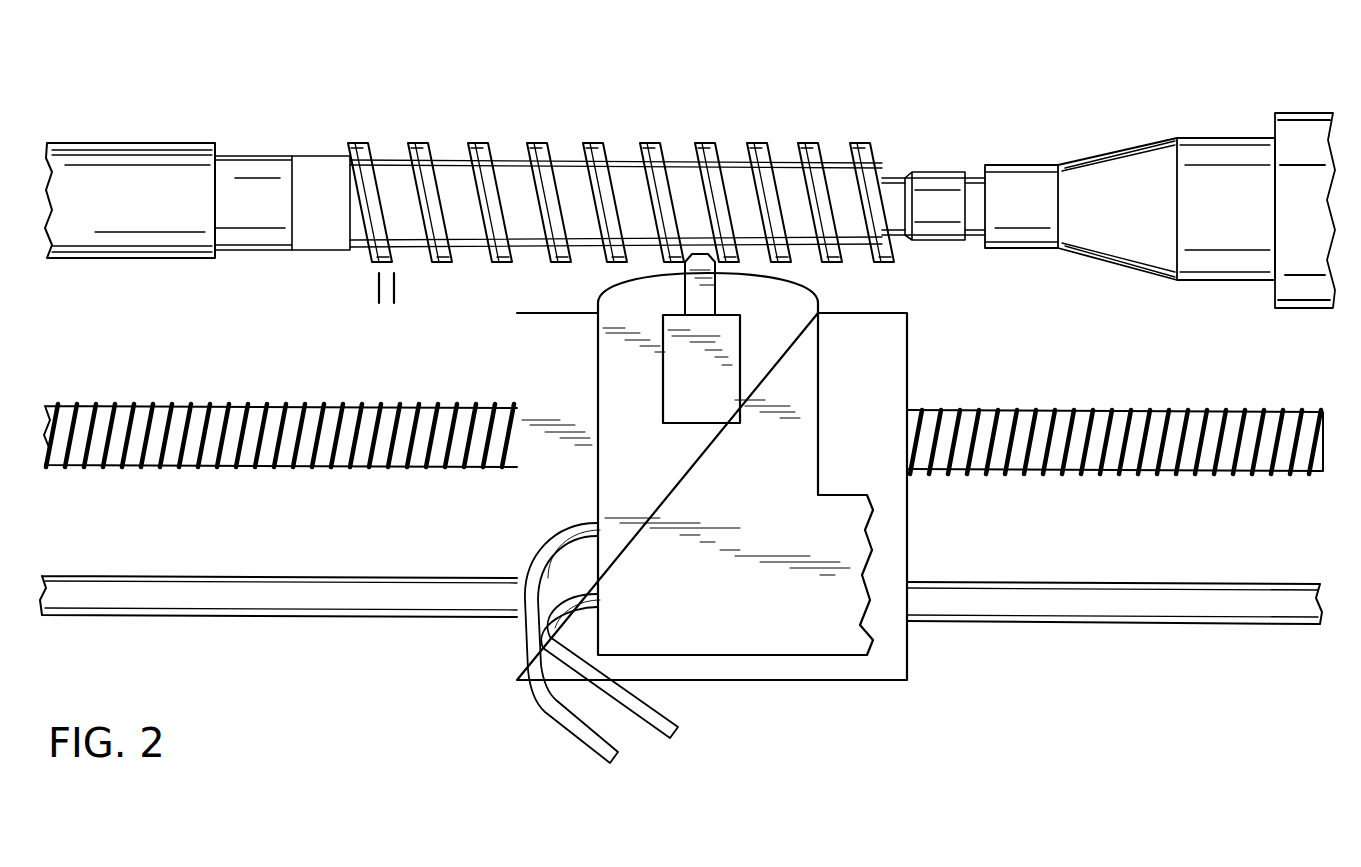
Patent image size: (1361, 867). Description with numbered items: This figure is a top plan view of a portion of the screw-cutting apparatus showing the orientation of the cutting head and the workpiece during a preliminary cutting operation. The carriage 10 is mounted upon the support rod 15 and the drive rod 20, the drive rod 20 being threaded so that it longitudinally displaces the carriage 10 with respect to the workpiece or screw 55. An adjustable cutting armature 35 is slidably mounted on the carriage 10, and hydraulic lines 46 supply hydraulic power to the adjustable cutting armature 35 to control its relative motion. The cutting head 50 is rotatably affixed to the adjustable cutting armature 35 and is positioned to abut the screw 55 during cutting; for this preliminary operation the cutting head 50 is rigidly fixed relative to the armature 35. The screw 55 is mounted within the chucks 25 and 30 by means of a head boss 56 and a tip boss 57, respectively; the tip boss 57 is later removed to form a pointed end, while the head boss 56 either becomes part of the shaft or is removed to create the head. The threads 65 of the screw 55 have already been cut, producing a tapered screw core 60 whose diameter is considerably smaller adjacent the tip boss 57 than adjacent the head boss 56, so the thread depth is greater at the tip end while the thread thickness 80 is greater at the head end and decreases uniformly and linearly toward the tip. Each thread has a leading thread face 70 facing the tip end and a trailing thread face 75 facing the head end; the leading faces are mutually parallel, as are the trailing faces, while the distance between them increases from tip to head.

The carriage 10 is at (580, 396).
The support rod 15 is at (263, 588).
The drive rod 20 is at (233, 408).
The chuck 25 is at (172, 160).
The chuck 30 is at (1303, 120).
The adjustable cutting armature 35 is at (788, 480).
The hydraulic lines 46 is at (537, 562).
The cutting head 50 is at (735, 350).
The screw 55 is at (862, 105).
The head boss 56 is at (320, 160).
The tip boss 57 is at (943, 182).
The tapered screw core 60 is at (453, 175).
The threads 65 is at (618, 140).
The leading thread face 70 is at (890, 238).
The trailing thread face 75 is at (763, 182).
The thread thickness 80 is at (386, 303).